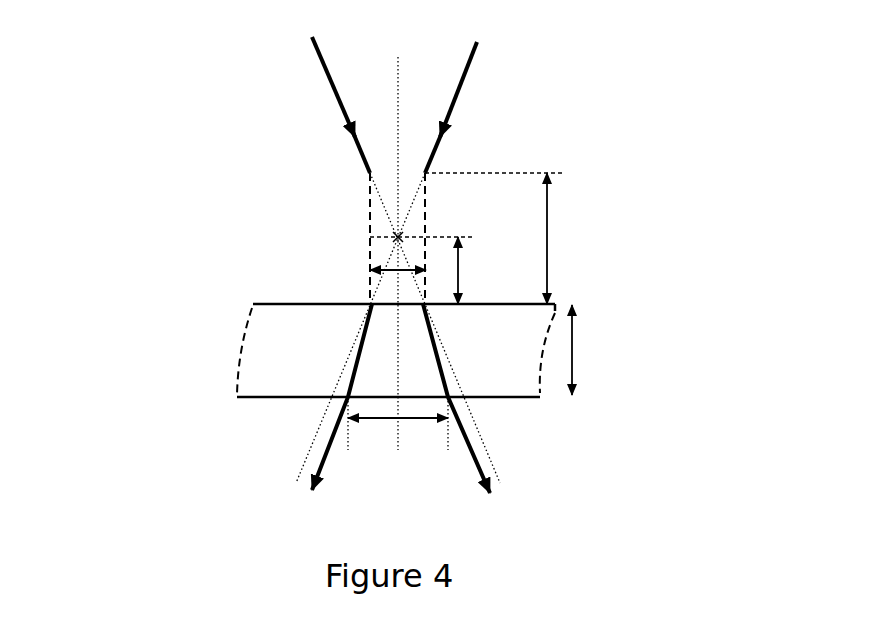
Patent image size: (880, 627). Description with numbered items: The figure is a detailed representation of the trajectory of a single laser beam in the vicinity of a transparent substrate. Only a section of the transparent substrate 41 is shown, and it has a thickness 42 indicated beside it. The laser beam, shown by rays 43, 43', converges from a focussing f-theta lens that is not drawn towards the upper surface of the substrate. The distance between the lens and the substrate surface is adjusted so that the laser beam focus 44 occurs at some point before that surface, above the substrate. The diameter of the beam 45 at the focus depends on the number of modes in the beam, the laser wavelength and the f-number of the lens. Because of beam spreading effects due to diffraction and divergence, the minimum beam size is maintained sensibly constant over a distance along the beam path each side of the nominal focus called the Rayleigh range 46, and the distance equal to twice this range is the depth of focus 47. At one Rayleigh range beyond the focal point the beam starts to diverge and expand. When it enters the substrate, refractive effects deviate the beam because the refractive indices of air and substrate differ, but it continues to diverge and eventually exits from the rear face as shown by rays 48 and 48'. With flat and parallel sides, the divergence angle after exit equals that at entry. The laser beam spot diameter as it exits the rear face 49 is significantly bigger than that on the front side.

The transparent substrate 41 is at (237, 352).
The thickness 42 is at (580, 343).
The ray 43 is at (334, 260).
The ray 43' is at (467, 262).
The laser beam focus 44 is at (385, 232).
The diameter of the beam 45 is at (363, 270).
The Rayleigh range 46 is at (463, 268).
The depth of focus 47 is at (552, 242).
The ray 48 is at (285, 404).
The ray 48' is at (549, 398).
The laser beam spot diameter 49 is at (417, 425).